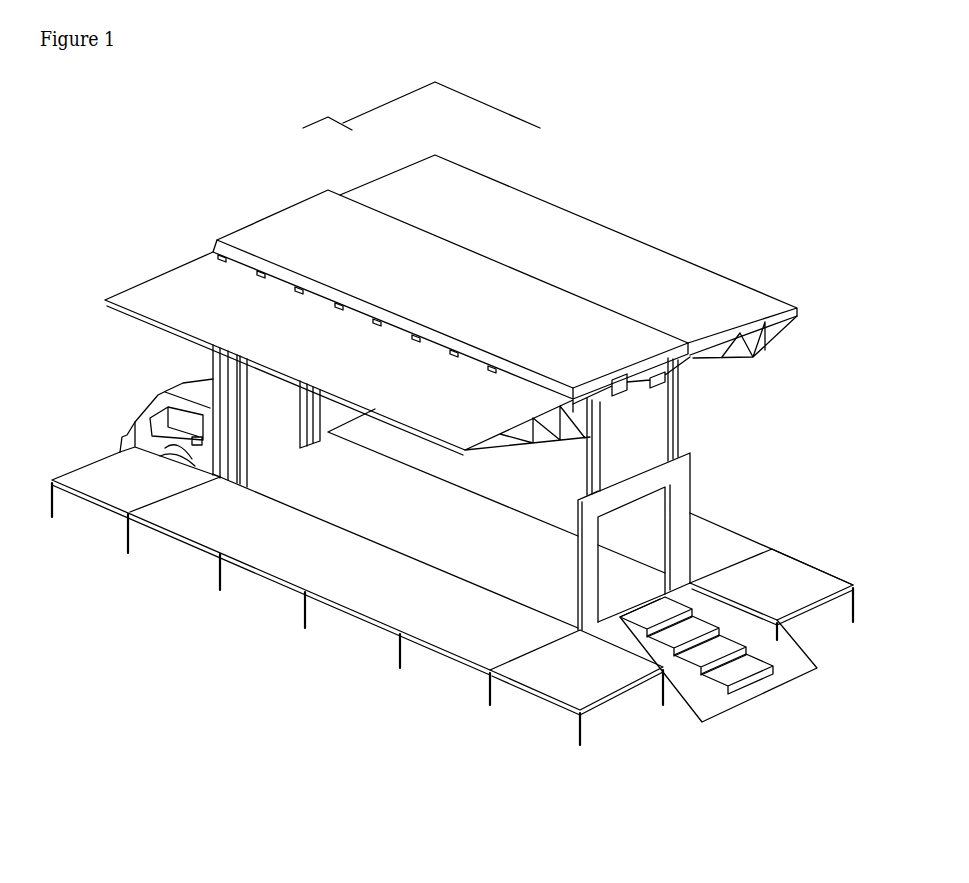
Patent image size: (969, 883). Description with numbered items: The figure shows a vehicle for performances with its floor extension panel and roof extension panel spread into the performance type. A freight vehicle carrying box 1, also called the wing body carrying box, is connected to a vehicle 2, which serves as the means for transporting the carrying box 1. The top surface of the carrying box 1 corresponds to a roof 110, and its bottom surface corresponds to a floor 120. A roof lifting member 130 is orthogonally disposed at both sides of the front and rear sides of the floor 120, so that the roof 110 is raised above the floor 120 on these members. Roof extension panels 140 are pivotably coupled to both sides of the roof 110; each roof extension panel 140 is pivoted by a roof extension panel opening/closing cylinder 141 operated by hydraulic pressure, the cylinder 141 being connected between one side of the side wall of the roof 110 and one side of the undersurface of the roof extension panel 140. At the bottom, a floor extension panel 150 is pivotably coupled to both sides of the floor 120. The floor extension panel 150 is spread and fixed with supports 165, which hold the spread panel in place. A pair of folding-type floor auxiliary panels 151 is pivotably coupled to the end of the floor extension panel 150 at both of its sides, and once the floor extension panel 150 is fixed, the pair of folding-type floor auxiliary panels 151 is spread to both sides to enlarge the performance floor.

The freight vehicle carrying box 1 is at (283, 127).
The vehicle 2 is at (133, 399).
The roof 110 is at (512, 320).
The floor 120 is at (407, 537).
The roof lifting member 130 is at (242, 432).
The roof extension panel 140 is at (173, 290).
The roof extension panel opening/closing cylinder 141 is at (660, 388).
The floor extension panel 150 is at (370, 605).
The folding-type floor auxiliary panel 151 is at (557, 683).
The support 165 is at (587, 723).